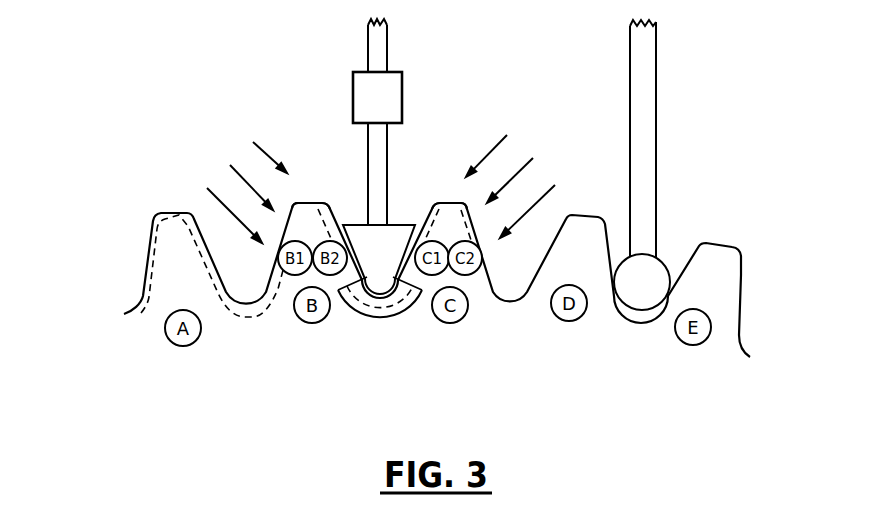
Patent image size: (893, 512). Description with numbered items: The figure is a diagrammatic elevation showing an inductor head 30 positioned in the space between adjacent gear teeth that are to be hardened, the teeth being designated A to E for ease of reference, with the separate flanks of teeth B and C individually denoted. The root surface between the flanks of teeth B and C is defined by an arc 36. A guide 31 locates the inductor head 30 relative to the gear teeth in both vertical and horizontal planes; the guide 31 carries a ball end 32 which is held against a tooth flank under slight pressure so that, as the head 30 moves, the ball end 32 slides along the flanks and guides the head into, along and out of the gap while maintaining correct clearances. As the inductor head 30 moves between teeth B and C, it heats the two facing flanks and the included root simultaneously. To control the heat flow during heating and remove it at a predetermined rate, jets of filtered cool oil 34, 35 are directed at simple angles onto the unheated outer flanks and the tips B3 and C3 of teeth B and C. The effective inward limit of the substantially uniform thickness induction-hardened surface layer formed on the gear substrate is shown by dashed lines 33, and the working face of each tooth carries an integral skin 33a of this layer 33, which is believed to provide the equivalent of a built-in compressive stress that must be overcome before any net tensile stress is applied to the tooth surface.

The inductor head 30 is at (380, 270).
The guide 31 is at (642, 95).
The ball ends 32 is at (652, 275).
The dashed lines 33 is at (153, 225).
The skin 33a is at (143, 270).
The jets of filtered cool oil 34 is at (240, 191).
The jets of filtered cool oil 35 is at (515, 186).
The arc 36 is at (392, 300).
The tip of tooth B B3 is at (308, 203).
The tip of tooth C C3 is at (450, 203).